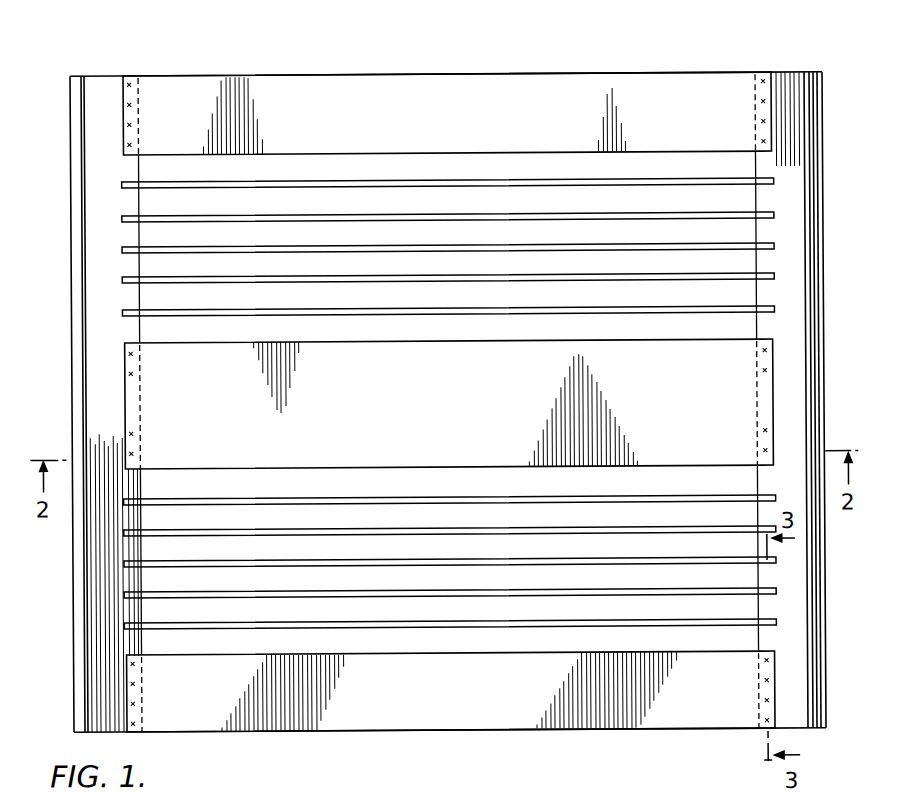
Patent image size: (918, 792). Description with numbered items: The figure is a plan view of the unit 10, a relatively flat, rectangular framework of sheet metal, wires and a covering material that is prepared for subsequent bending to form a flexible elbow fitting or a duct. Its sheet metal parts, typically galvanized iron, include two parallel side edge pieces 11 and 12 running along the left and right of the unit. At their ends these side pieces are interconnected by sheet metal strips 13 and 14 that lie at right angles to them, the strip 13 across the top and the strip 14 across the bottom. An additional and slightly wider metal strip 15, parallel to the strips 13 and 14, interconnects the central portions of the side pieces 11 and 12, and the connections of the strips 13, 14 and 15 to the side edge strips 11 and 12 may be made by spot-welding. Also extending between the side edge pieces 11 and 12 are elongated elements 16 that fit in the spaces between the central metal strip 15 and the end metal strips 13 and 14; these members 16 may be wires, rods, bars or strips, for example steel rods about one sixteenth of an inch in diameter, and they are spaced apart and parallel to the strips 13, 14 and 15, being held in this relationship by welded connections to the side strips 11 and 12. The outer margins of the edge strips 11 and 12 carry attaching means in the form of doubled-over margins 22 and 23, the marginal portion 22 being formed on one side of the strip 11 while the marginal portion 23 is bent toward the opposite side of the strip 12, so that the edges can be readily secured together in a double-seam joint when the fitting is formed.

The unit 10 is at (357, 70).
The side edge piece 11 is at (92, 76).
The side edge piece 12 is at (790, 72).
The end metal strip 13 is at (552, 88).
The end metal strip 14 is at (324, 722).
The central metal strip 15 is at (448, 403).
The elongated elements 16 is at (167, 268).
The doubled-over margin 22 is at (84, 676).
The doubled-over margin 23 is at (846, 672).